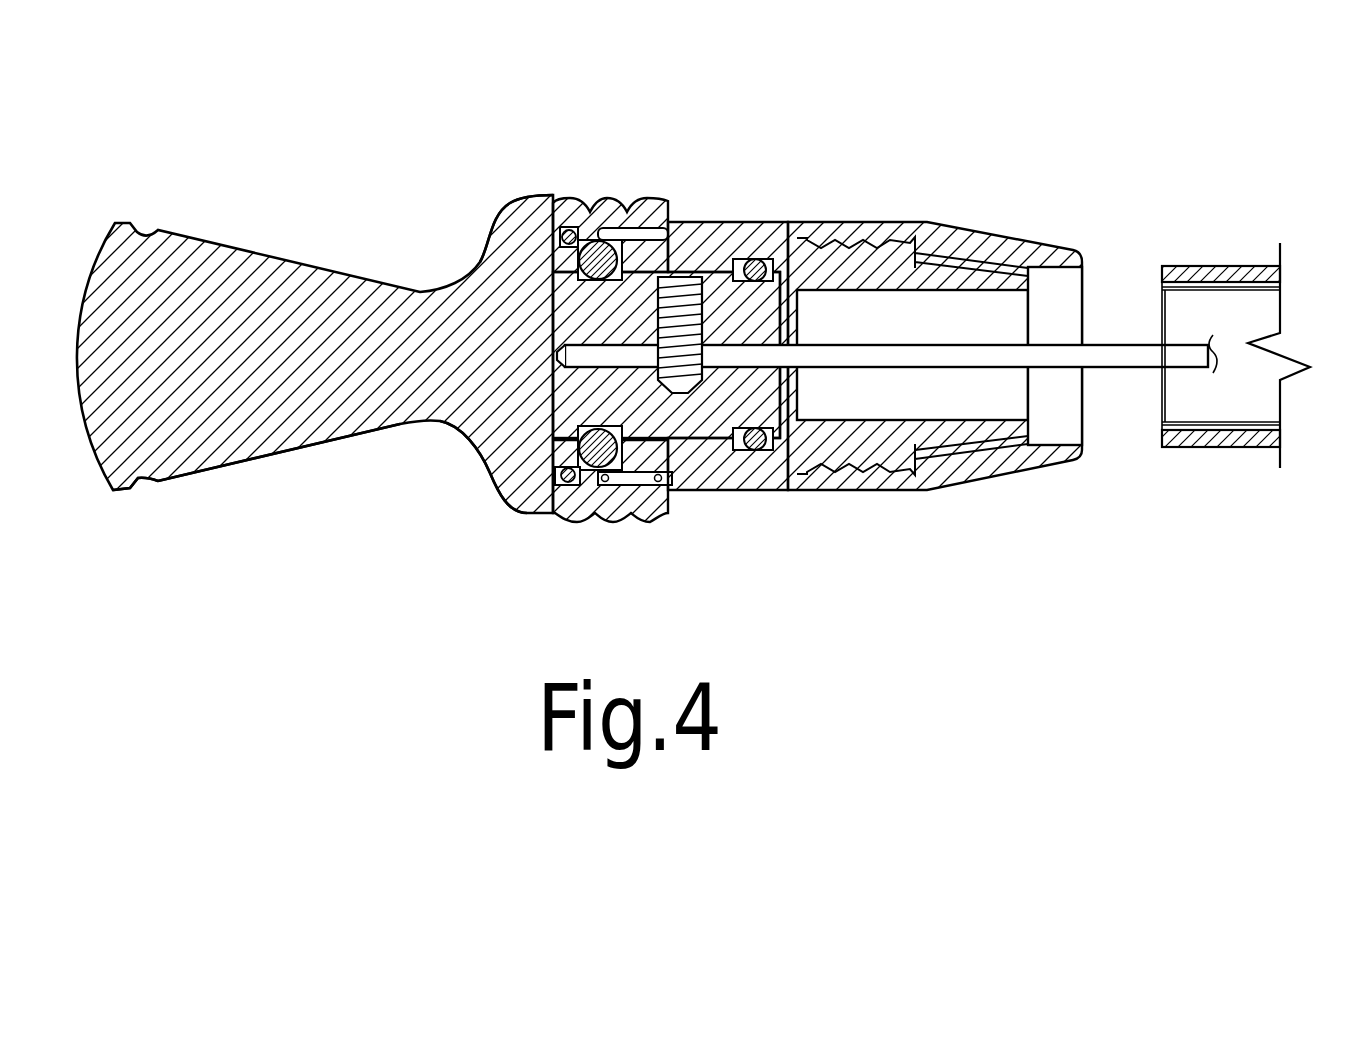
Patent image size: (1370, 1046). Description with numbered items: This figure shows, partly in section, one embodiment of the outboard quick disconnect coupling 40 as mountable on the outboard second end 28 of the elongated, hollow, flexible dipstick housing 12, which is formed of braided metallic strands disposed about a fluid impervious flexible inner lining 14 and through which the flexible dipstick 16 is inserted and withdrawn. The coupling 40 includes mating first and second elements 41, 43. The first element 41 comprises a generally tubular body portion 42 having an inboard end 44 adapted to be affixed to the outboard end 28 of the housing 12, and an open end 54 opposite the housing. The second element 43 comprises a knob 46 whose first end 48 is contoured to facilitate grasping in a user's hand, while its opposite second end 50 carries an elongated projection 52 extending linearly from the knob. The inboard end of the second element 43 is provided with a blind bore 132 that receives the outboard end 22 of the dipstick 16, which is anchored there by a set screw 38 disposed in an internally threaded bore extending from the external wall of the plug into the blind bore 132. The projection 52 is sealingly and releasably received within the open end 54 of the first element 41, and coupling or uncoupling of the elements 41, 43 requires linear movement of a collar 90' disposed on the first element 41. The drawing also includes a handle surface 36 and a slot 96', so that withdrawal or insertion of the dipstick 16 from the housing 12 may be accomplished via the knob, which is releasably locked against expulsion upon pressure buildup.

The dipstick housing 12 is at (1253, 263).
The inner lining 14 is at (1257, 428).
The flexible dipstick 16 is at (857, 357).
The outboard end of the dipstick 22 is at (617, 357).
The outboard second end of the dipstick housing 28 is at (1220, 447).
The handle surface 36 is at (422, 421).
The set screw 38 is at (685, 283).
The outboard quick disconnect coupling 40 is at (677, 97).
The first element 41 is at (893, 197).
The tubular body portion 42 is at (775, 467).
The second element 43 is at (480, 485).
The inboard end of the tubular body portion 44 is at (973, 273).
The knob 46 is at (233, 247).
The first end of the knob 48 is at (177, 448).
The second end of the knob 50 is at (552, 208).
The elongated projection 52 is at (673, 407).
The open end of the first element 54 is at (553, 283).
The collar 90' is at (572, 165).
The slot 96' is at (633, 175).
The blind bore 132 is at (548, 352).